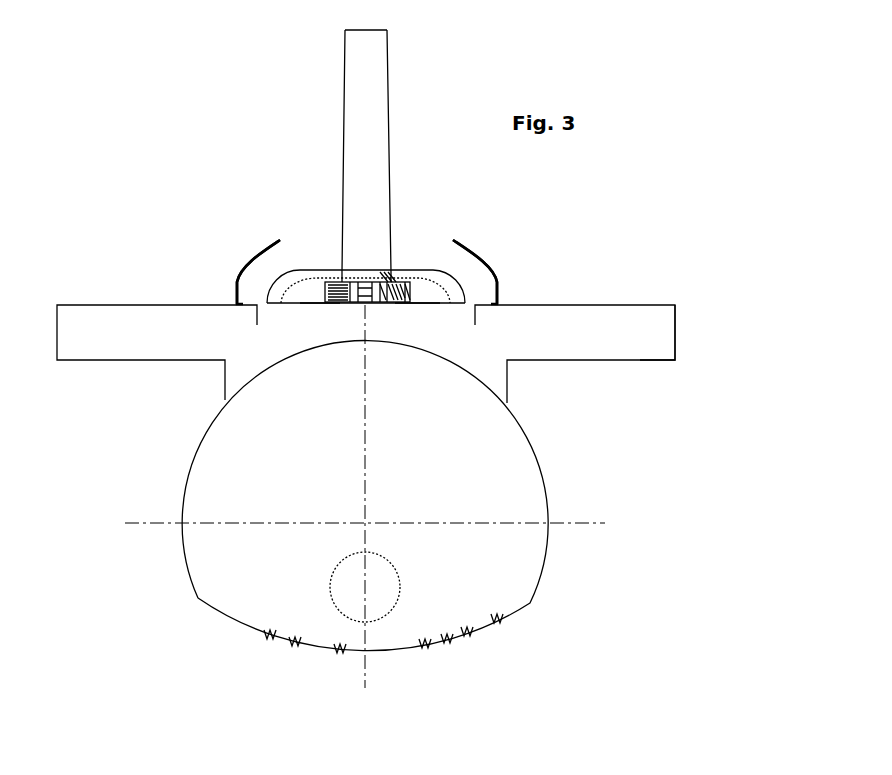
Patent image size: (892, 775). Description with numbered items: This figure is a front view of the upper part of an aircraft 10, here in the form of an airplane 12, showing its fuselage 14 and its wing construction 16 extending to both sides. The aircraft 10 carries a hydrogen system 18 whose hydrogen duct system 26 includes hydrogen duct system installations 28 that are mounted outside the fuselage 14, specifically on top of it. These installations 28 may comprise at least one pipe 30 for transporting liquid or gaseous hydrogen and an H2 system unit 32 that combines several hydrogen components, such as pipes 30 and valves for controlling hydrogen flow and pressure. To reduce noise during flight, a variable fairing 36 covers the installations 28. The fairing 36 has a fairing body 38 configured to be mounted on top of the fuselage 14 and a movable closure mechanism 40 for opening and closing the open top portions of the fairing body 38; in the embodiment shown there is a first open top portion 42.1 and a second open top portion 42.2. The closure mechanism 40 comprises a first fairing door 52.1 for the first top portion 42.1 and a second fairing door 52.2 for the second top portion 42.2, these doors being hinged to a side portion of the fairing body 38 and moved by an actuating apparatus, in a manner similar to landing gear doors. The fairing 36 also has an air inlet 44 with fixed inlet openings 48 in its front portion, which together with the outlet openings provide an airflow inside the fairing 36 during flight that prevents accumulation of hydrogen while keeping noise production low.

The aircraft 10 is at (190, 208).
The airplane 12 is at (378, 359).
The fuselage 14 is at (207, 562).
The wing construction 16 is at (640, 347).
The hydrogen system 18 is at (320, 313).
The hydrogen duct system 26 is at (408, 313).
The hydrogen duct system installations 28 is at (405, 276).
The pipe 30 is at (415, 272).
The H2 system unit 32 is at (335, 283).
The variable fairing 36 is at (488, 253).
The fairing body 38 is at (295, 275).
The movable closure mechanism 40 is at (226, 257).
The first open top portion 42.1 is at (296, 262).
The second open top portion 42.2 is at (445, 264).
The air inlet 44 is at (316, 288).
The fixed inlet openings 48 is at (344, 275).
The first fairing door 52.1 is at (255, 265).
The second fairing door 52.2 is at (500, 272).